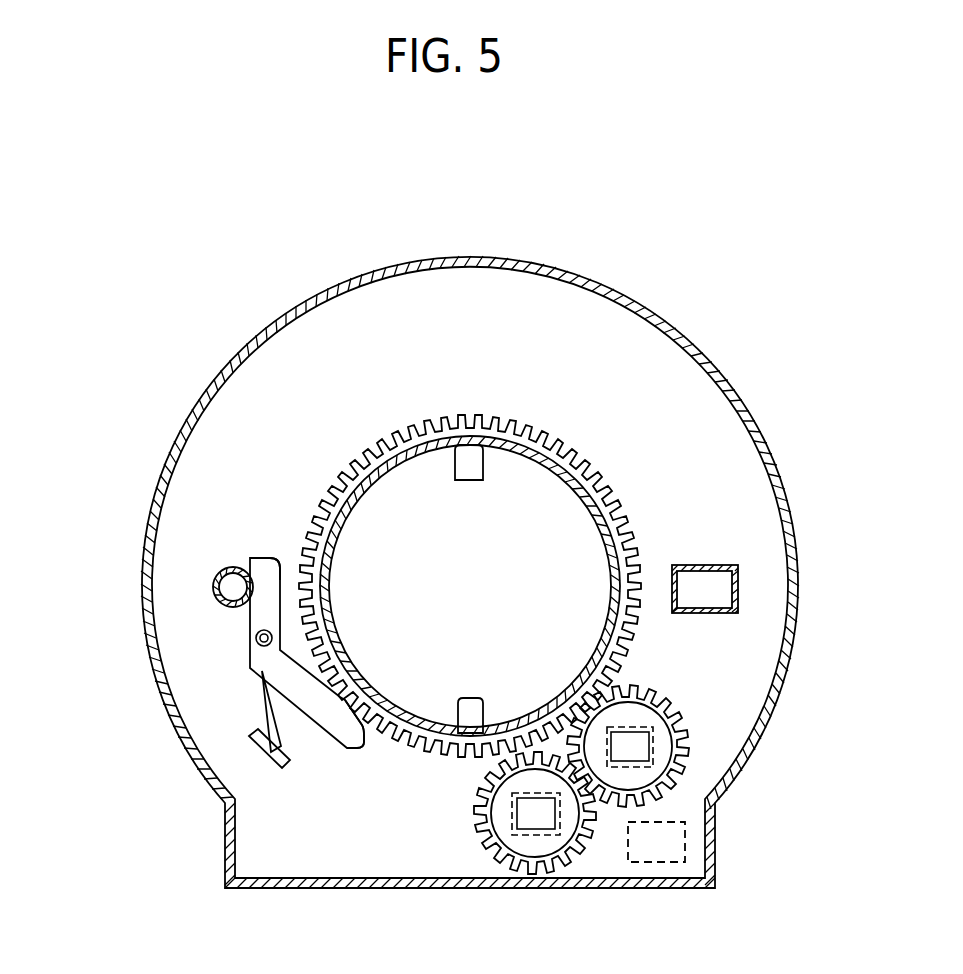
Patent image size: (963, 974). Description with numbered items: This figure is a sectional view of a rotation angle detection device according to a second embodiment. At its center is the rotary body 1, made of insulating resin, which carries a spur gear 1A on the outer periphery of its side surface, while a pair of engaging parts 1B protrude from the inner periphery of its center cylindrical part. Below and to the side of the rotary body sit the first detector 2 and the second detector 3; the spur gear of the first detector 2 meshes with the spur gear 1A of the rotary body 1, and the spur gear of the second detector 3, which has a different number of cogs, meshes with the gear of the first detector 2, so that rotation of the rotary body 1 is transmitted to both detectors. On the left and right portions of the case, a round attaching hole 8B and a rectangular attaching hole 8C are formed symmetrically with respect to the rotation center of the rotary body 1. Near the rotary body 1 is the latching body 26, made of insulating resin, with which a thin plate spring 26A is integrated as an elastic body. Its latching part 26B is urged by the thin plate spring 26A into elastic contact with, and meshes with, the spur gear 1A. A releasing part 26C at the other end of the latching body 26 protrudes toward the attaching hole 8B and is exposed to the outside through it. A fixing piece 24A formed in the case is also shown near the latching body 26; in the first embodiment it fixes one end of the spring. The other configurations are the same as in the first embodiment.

The rotary body 1 is at (565, 427).
The spur gear 1A is at (605, 478).
The engaging parts 1B is at (468, 462).
The first detector 2 is at (692, 765).
The second detector 3 is at (585, 858).
The attaching hole 8B is at (232, 587).
The attaching hole 8C is at (717, 588).
The fixing piece 24A is at (267, 745).
The latching body 26 is at (247, 645).
The thin plate spring 26A is at (260, 710).
The latching part 26B is at (340, 729).
The releasing part 26C is at (262, 570).